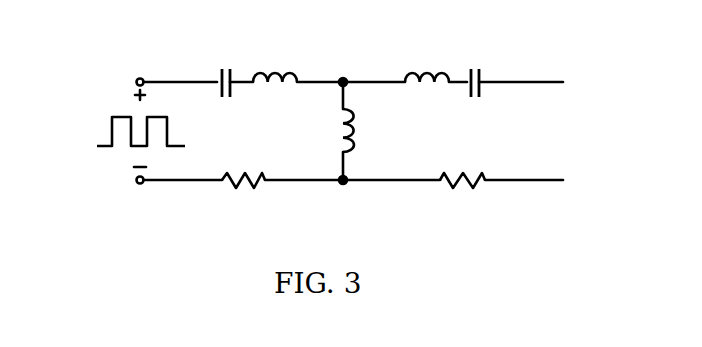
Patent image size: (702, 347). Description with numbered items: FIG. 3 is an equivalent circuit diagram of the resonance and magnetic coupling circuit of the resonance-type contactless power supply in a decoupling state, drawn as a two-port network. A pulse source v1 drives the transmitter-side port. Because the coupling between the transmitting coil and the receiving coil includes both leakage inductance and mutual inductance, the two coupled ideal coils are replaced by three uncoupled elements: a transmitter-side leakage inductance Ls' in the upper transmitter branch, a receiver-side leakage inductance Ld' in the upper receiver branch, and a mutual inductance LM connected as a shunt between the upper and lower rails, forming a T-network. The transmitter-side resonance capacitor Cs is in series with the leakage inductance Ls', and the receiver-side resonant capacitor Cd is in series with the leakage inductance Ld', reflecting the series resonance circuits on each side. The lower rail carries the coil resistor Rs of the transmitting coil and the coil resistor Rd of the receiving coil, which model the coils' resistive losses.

The input pulse voltage source v1 is at (125, 131).
The transmitter-side resonance capacitor Cs is at (223, 68).
The transmitter-side leakage inductance Ls' is at (275, 61).
The mutual inductance LM is at (330, 131).
The receiver-side leakage inductance Ld' is at (427, 61).
The receiver-side resonant capacitor Cd is at (472, 69).
The coil resistor Rs is at (243, 204).
The coil resistor Rd is at (462, 204).